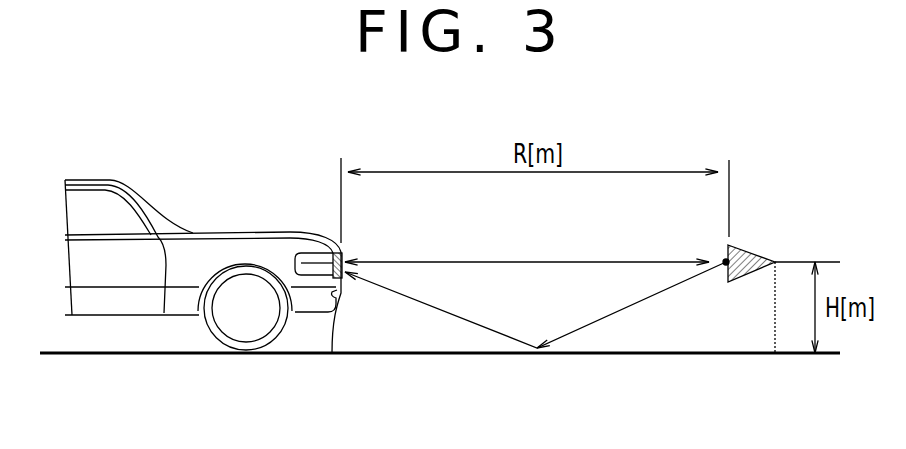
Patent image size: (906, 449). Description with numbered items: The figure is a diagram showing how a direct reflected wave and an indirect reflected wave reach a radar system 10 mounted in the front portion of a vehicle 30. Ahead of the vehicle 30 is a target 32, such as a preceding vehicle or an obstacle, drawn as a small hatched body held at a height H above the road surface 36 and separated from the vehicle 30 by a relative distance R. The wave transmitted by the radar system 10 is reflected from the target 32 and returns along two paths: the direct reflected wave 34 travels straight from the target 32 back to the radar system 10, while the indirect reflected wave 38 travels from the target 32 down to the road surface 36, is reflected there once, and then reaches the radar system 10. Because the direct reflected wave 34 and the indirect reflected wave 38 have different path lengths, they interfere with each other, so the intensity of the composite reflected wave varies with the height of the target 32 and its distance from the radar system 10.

The radar system 10 is at (331, 353).
The vehicle 30 is at (202, 231).
The target 32 is at (748, 247).
The direct reflected wave 34 is at (483, 250).
The road surface 36 is at (668, 354).
The indirect reflected wave 38 is at (487, 317).